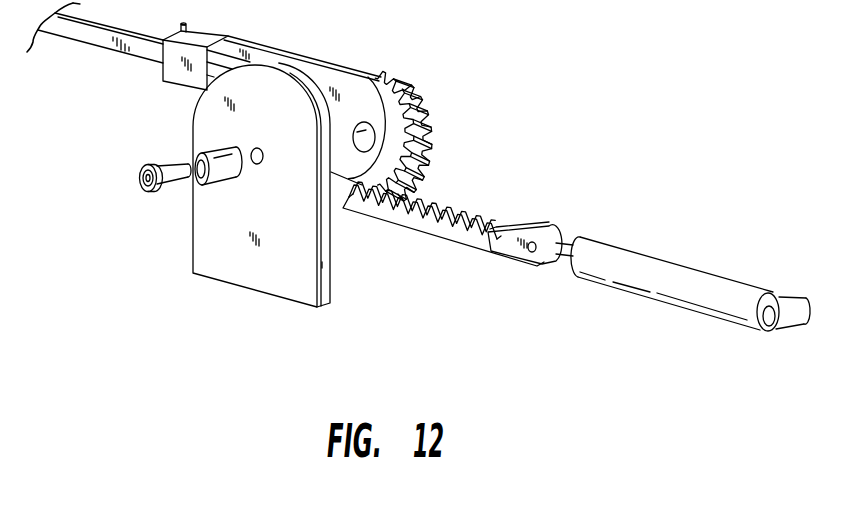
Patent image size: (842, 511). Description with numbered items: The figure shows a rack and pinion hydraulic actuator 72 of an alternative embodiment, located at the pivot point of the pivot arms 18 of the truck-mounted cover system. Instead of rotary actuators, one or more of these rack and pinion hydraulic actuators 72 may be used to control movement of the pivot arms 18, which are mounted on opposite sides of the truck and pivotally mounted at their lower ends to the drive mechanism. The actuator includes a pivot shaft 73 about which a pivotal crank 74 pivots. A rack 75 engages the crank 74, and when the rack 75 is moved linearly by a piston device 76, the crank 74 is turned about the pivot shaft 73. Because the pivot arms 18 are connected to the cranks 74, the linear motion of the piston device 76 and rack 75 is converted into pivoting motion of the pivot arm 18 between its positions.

The pivot arm 18 is at (95, 40).
The rack and pinion hydraulic actuator 72 is at (468, 157).
The pivot shaft 73 is at (179, 198).
The pivotal crank 74 is at (433, 93).
The rack 75 is at (462, 251).
The piston device 76 is at (690, 305).